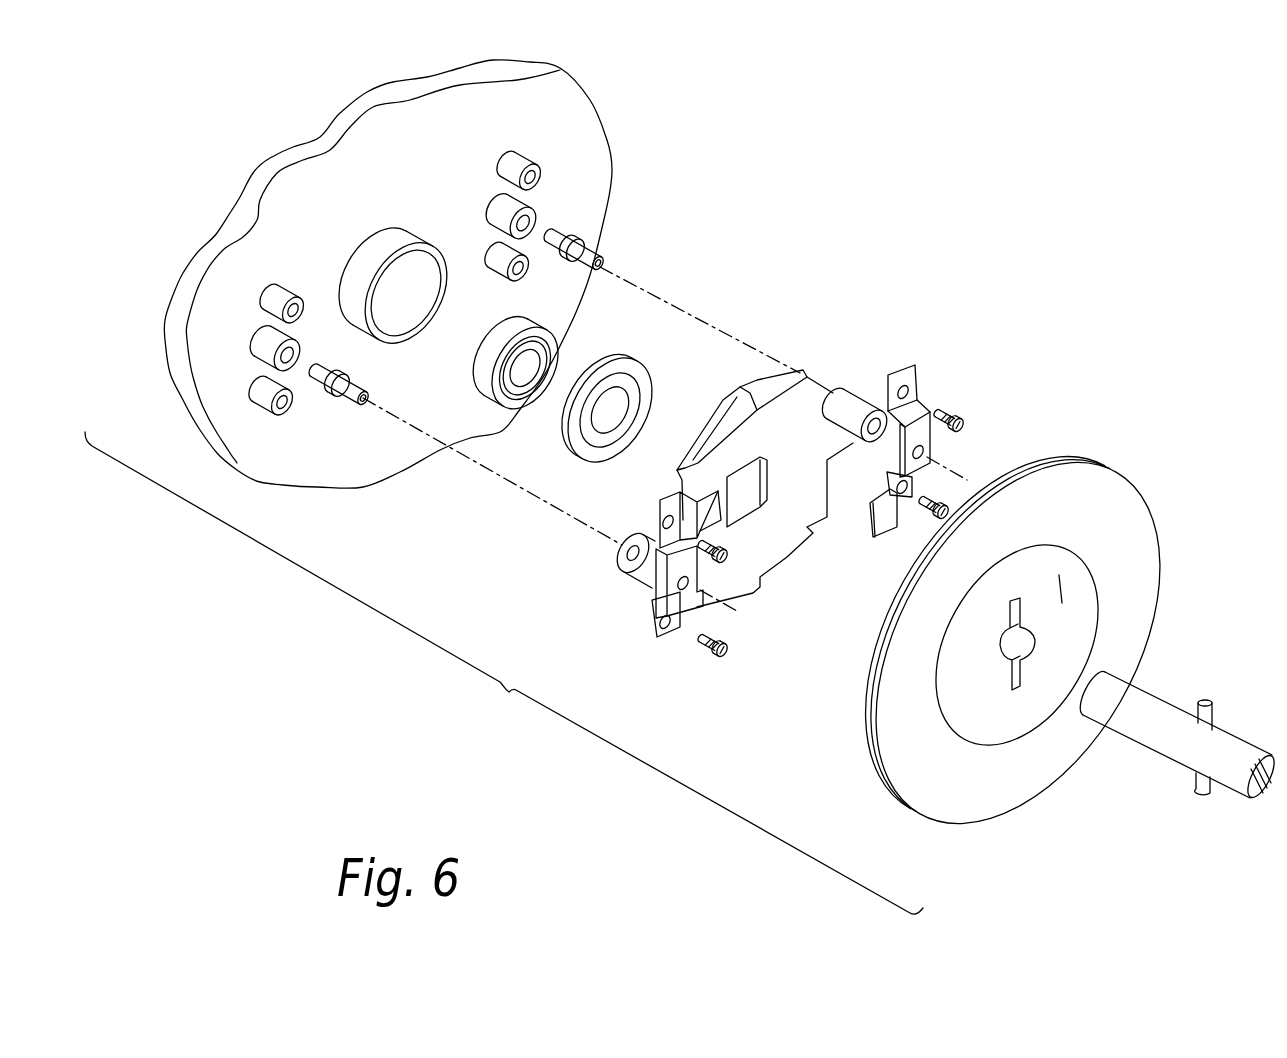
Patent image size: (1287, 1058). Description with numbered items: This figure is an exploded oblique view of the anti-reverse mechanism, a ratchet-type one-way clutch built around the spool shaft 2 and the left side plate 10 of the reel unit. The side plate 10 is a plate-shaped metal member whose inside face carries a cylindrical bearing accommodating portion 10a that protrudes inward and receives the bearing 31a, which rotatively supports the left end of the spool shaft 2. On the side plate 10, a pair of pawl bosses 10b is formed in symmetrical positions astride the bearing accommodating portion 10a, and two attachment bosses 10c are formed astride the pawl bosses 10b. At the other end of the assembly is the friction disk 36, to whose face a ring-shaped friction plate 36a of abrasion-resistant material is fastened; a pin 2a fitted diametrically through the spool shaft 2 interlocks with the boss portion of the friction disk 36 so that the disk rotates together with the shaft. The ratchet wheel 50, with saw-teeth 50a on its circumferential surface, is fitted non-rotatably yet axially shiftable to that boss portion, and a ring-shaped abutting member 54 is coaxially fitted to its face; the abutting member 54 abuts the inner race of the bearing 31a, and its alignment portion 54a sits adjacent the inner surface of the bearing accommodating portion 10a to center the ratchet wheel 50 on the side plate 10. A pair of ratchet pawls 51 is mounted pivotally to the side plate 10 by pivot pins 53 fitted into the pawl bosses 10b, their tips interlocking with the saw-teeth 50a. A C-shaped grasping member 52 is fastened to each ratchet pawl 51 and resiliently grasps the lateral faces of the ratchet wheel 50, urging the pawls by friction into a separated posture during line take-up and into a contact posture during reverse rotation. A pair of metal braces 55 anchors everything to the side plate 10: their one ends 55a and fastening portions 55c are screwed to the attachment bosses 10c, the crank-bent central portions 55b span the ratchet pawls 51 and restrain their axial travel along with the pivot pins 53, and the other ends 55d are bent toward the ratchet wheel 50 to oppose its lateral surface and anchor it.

The spool shaft 2 is at (1179, 718).
The pin 2a is at (1207, 705).
The left side plate 10 is at (579, 131).
The bearing accommodating portion 10a is at (382, 253).
The pawl bosses 10b is at (510, 207).
The attachment bosses 10c is at (517, 163).
The bearing 31a is at (513, 323).
The friction disk 36 is at (1022, 642).
The friction plate 36a is at (1132, 515).
The ratchet wheel 50 is at (765, 432).
The saw-teeth 50a is at (743, 388).
The ratchet pawls 51 is at (877, 403).
The grasping member 52 is at (868, 410).
The pivot pins 53 is at (587, 258).
The abutting member 54 is at (533, 456).
The alignment portion 54a is at (568, 420).
The braces 55 is at (807, 518).
The one ends 55a is at (658, 633).
The central portions 55b is at (685, 613).
The fastening portions 55c is at (658, 518).
The other ends 55d is at (710, 522).